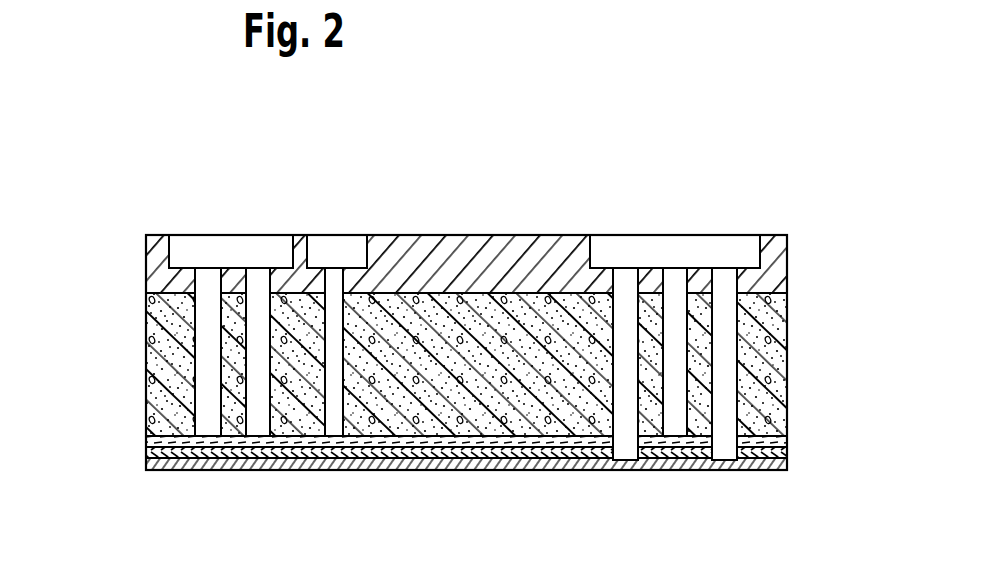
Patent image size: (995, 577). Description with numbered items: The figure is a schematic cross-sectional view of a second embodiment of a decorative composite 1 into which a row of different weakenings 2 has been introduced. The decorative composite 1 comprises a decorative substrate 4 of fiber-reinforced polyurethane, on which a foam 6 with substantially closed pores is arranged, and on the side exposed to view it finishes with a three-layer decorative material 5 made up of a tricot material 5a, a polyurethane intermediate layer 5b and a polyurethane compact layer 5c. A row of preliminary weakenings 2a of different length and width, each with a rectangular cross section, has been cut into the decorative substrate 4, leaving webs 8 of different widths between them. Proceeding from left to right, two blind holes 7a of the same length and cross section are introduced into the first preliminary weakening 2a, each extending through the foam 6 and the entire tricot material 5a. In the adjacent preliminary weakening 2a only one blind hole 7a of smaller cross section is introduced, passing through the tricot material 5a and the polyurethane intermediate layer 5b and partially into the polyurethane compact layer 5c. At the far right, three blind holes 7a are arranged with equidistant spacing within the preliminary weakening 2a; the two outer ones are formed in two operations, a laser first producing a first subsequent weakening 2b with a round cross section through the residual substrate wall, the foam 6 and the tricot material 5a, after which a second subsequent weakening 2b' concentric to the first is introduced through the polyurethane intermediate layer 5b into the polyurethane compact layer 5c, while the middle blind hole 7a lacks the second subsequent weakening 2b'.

The decorative composite 1 is at (103, 210).
The weakening 2 is at (195, 316).
The preliminary weakening 2a is at (202, 248).
The first subsequent weakening 2b is at (701, 454).
The second subsequent weakening 2b' is at (695, 415).
The decorative substrate 4 is at (776, 262).
The decorative material 5 is at (796, 453).
The tricot material 5a is at (152, 441).
The polyurethane intermediate layer 5b is at (152, 453).
The polyurethane compact layer 5c is at (152, 466).
The foam 6 is at (776, 340).
The blind hole 7a is at (258, 418).
The web 8 is at (297, 238).